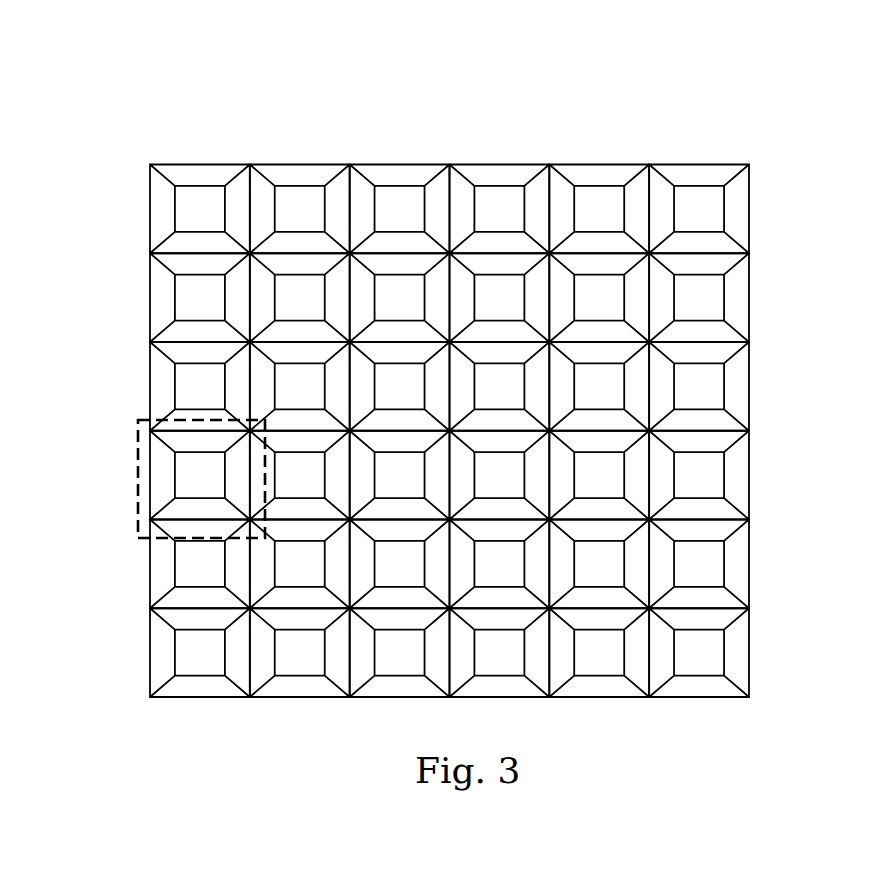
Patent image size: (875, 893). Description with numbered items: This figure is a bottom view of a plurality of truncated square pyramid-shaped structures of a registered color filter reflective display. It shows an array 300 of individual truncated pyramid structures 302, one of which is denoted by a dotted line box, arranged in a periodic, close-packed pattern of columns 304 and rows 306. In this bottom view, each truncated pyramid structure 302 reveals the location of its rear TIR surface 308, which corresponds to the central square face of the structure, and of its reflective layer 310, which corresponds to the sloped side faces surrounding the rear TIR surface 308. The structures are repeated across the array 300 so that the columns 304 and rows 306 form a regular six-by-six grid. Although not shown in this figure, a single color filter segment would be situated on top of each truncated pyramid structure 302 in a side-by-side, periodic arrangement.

The array 300 is at (446, 365).
The truncated pyramid structure 302 is at (138, 478).
The columns 304 is at (447, 153).
The rows 306 is at (767, 250).
The rear TIR surface 308 is at (697, 212).
The reflective layer 310 is at (207, 176).